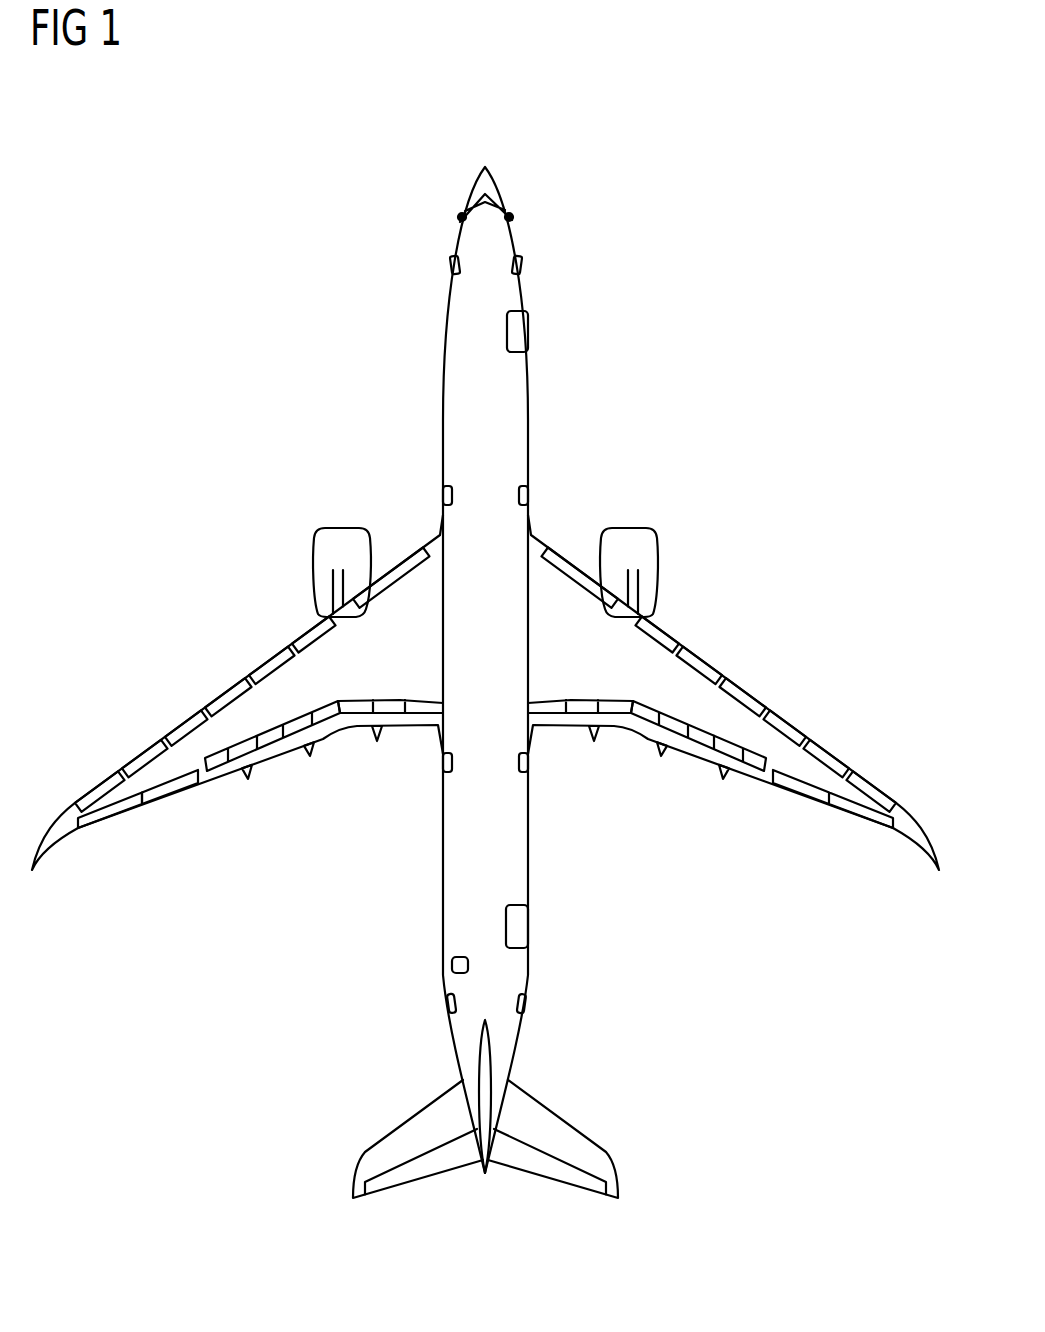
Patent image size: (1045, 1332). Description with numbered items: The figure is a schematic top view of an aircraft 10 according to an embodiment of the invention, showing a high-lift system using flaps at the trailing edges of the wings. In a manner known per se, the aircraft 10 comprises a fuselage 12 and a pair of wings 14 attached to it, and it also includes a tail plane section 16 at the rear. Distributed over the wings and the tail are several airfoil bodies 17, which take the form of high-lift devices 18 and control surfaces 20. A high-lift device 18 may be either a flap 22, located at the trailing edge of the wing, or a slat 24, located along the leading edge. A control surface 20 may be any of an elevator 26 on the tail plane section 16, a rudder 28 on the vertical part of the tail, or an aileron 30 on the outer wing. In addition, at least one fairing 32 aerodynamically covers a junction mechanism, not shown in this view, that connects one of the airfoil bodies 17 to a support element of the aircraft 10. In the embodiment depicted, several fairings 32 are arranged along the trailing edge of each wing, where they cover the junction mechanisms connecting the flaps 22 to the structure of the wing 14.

The aircraft 10 is at (273, 124).
The fuselage 12 is at (431, 322).
The wings 14 is at (236, 702).
The tail plane section 16 is at (453, 1102).
The airfoil bodies 17 is at (277, 752).
The high-lift devices 18 is at (378, 599).
The control surfaces 20 is at (116, 816).
The flap 22 is at (567, 722).
The slat 24 is at (411, 565).
The elevator 26 is at (427, 1165).
The rudder 28 is at (493, 1172).
The aileron 30 is at (172, 792).
The fairing 32 is at (245, 778).